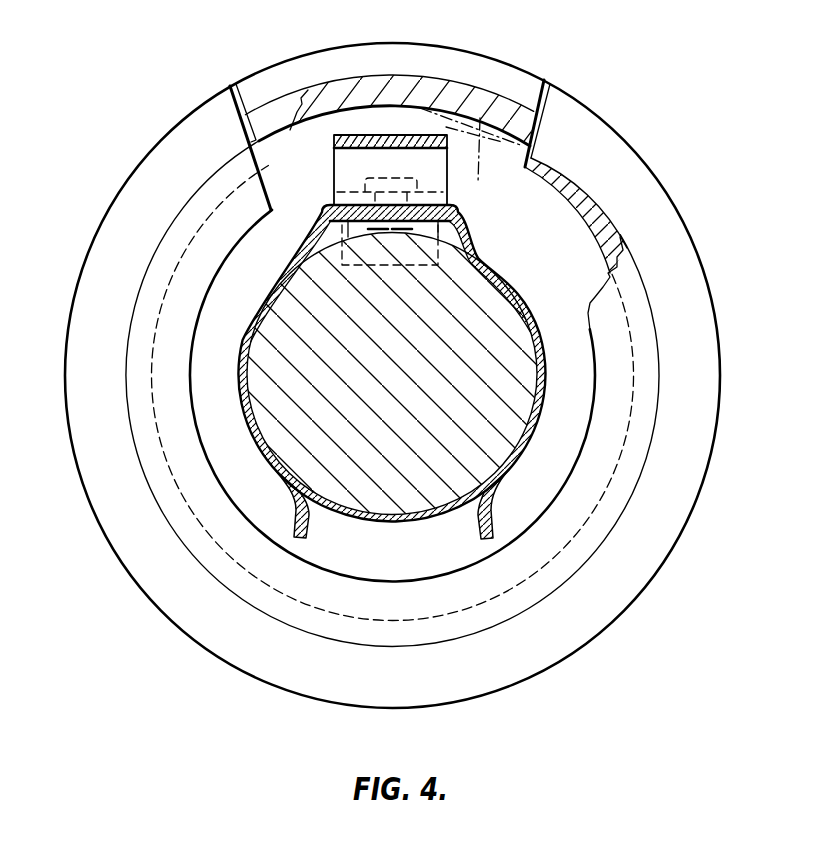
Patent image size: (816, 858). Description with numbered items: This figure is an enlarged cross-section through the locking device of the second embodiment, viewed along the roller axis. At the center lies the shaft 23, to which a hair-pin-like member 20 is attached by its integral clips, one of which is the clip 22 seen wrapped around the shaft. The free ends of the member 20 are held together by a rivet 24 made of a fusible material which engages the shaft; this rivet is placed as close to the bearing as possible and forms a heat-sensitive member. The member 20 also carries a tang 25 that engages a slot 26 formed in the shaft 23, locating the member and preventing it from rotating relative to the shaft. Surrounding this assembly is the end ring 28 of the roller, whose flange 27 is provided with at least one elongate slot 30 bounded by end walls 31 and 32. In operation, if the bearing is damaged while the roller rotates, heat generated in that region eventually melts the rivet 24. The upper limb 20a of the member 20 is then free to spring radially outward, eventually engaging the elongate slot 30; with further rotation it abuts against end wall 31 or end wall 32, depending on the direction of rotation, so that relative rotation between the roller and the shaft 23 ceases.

The hair-pin-like member 20 is at (402, 137).
The upper limb 20a is at (447, 145).
The clip 22 is at (278, 281).
The shaft 23 is at (478, 290).
The rivet 24 is at (396, 178).
The tang 25 is at (328, 209).
The slot 26 is at (340, 252).
The flange 27 is at (607, 300).
The end ring 28 is at (115, 202).
The elongate slot 30 is at (312, 140).
The end wall 31 is at (267, 185).
The end wall 32 is at (527, 166).